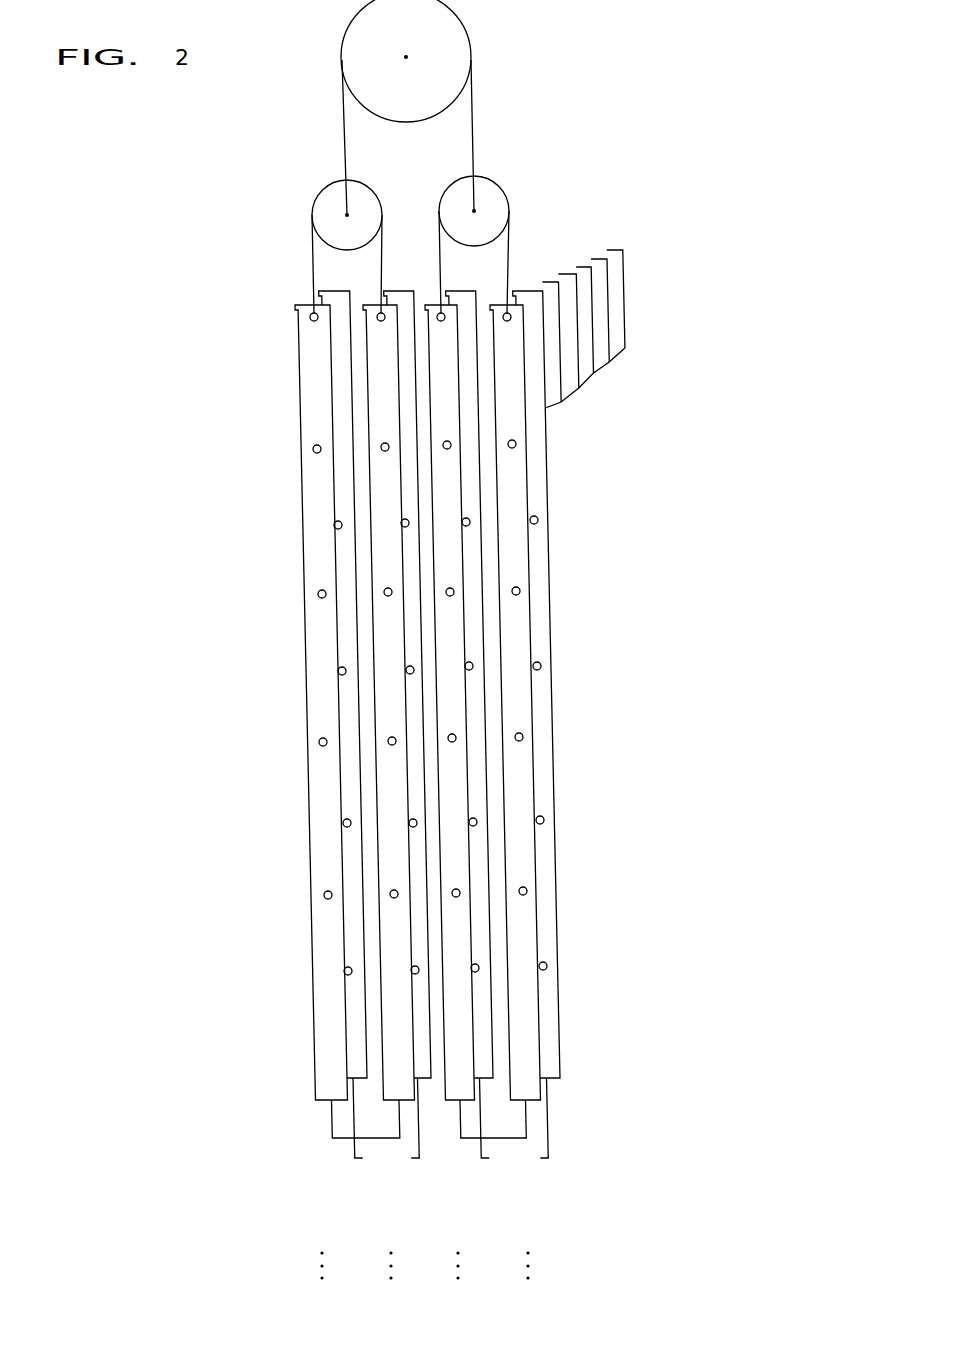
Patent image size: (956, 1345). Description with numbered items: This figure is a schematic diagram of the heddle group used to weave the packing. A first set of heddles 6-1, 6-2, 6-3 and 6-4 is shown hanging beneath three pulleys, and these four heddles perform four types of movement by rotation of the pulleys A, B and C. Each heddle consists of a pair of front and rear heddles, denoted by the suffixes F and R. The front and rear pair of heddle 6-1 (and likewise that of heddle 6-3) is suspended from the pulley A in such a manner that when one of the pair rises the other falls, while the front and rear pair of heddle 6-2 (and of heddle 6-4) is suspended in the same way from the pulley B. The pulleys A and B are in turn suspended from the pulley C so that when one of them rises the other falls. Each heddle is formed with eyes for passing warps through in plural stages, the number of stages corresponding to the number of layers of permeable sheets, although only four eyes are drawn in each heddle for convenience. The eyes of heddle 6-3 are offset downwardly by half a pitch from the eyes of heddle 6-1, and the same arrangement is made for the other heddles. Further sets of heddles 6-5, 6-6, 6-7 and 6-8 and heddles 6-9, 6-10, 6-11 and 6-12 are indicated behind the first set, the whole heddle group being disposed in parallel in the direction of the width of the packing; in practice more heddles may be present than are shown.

The pulley A is at (327, 197).
The pulley B is at (490, 193).
The pulley C is at (450, 40).
The heddle 6-1 is at (354, 740).
The heddle 6-2 is at (483, 740).
The heddle 6-3 is at (376, 733).
The heddle 6-4 is at (504, 733).
The heddle 6-5 is at (317, 1192).
The heddle 6-6 is at (453, 1192).
The heddle 6-7 is at (391, 1192).
The heddle 6-8 is at (523, 1192).
The heddle 6-9 is at (317, 1228).
The heddle 6-10 is at (458, 1228).
The heddle 6-11 is at (391, 1228).
The heddle 6-12 is at (528, 1228).
The front heddle F is at (317, 1065).
The rear heddle R is at (390, 1014).